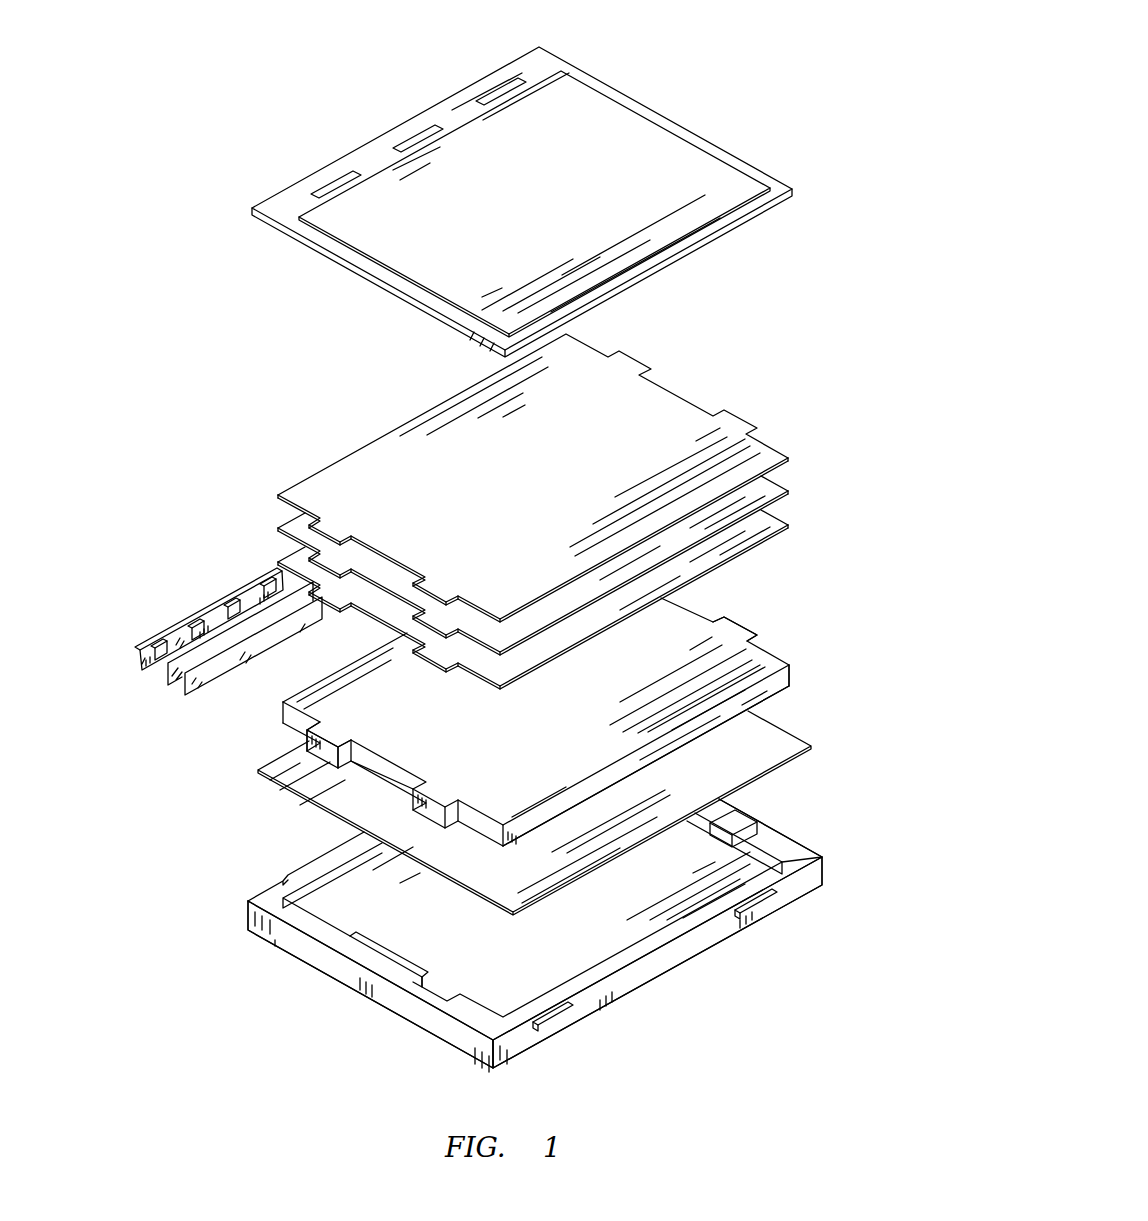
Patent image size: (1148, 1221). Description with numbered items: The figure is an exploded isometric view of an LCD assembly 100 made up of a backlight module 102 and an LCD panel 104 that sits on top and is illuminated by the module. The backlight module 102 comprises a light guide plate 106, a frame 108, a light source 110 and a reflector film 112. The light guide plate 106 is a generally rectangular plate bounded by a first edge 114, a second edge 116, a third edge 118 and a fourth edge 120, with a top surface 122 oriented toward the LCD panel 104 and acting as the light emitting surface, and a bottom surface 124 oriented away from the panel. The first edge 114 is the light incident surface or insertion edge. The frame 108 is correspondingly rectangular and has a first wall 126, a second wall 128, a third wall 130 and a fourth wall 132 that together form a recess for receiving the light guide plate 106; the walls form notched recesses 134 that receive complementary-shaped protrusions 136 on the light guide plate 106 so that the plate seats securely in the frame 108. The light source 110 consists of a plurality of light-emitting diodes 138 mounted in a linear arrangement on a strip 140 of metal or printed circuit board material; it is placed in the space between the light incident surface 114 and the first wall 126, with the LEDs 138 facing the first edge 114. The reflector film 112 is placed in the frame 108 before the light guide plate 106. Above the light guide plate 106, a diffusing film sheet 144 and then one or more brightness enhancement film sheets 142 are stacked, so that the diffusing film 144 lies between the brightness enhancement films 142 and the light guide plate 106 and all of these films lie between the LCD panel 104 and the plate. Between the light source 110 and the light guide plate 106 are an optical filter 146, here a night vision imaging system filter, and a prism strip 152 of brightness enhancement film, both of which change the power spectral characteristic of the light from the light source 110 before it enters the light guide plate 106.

The LCD assembly 100 is at (368, 66).
The backlight module 102 is at (136, 599).
The LCD panel 104 is at (636, 90).
The light guide plate 106 is at (700, 603).
The frame 108 is at (789, 830).
The light source 110 is at (139, 636).
The reflector film 112 is at (762, 741).
The first edge 114 is at (337, 661).
The second edge 116 is at (765, 711).
The third edge 118 is at (762, 658).
The fourth edge 120 is at (378, 787).
The top surface 122 is at (789, 673).
The bottom surface 124 is at (742, 701).
The first wall 126 is at (330, 853).
The second wall 128 is at (796, 852).
The third wall 130 is at (652, 976).
The fourth wall 132 is at (313, 957).
The notched recesses 134 is at (745, 835).
The protrusions 136 is at (730, 626).
The light-emitting diodes 138 is at (271, 582).
The strip 140 is at (215, 618).
The brightness enhancement film sheets 142 is at (763, 457).
The diffusing film sheet 144 is at (772, 527).
The optical filter 146 is at (228, 683).
The prism strip 152 is at (158, 684).